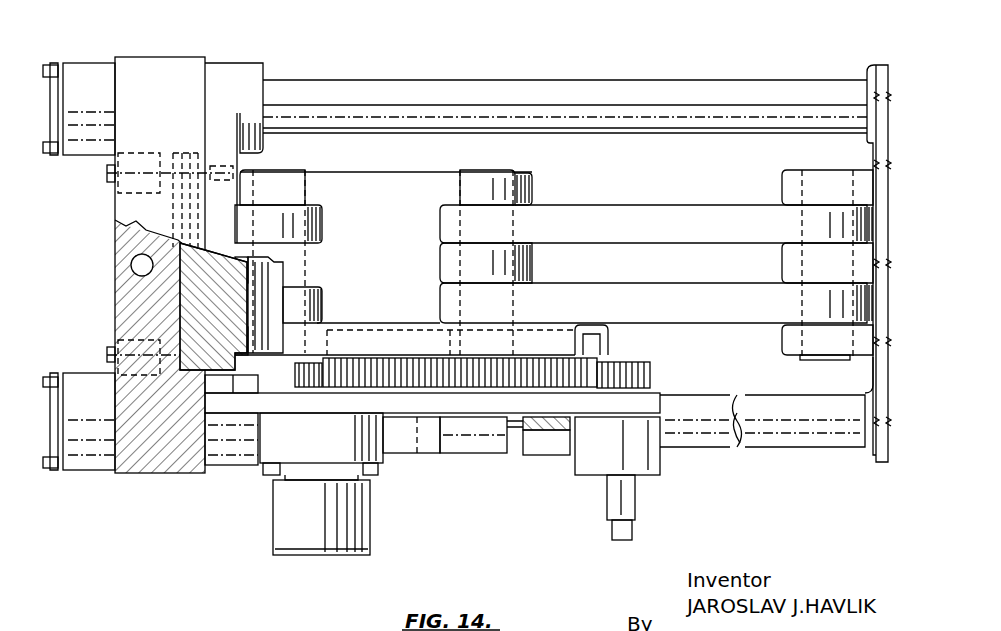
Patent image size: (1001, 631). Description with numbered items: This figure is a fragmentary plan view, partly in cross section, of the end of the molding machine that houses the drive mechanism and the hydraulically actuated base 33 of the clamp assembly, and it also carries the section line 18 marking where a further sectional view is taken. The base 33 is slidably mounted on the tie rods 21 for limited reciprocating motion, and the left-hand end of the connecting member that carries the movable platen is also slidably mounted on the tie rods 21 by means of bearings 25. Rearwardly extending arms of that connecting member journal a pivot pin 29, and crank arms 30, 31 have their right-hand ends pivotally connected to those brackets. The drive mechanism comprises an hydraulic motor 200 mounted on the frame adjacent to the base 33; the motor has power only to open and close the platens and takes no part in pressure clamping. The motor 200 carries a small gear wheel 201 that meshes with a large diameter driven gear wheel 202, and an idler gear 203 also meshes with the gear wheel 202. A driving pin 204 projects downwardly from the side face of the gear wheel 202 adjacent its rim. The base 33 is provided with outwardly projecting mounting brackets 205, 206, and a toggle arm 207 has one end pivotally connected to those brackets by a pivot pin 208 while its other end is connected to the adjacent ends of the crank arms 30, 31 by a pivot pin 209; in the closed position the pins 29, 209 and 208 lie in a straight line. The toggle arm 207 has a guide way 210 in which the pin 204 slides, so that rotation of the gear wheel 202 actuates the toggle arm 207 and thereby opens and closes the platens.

The section line 18- 18 is at (90, 268).
The tie rods 21 is at (723, 447).
The bearings 25 is at (877, 63).
The pivot pin 29 is at (810, 357).
The crank arm 30 is at (688, 308).
The crank arm 31 is at (683, 215).
The hydraulically actuated base 33 is at (200, 308).
The hydraulic motor 200 is at (368, 533).
The small gear wheel 201 is at (302, 388).
The driven gear wheel 202 is at (412, 387).
The idler gear 203 is at (465, 385).
The driving pin 204 is at (427, 357).
The mounting bracket 205 is at (312, 215).
The mounting bracket 206 is at (312, 290).
The toggle arm 207 is at (430, 183).
The pivot pin 208 is at (288, 170).
The pivot pin 209 is at (503, 170).
The guide way 210 is at (650, 340).